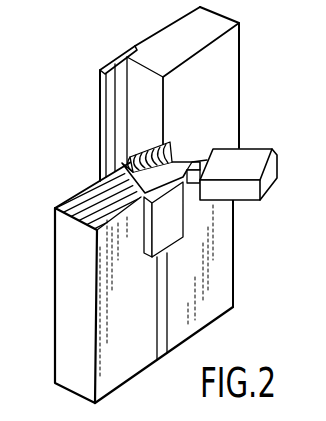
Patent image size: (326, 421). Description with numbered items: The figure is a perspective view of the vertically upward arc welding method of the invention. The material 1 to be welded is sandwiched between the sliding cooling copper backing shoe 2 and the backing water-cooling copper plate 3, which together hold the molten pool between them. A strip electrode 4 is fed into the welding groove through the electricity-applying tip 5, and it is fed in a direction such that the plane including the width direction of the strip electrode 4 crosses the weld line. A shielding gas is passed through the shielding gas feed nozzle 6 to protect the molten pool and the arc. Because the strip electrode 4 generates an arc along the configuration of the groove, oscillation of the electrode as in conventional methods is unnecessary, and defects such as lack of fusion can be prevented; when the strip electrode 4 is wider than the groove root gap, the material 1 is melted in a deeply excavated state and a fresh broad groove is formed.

The material to be welded 1 is at (59, 290).
The sliding cooling copper backing shoe 2 is at (166, 231).
The backing water-cooling copper plate 3 is at (98, 85).
The strip electrode 4 is at (175, 166).
The electricity-applying tip 5 is at (200, 163).
The shielding gas feed nozzle 6 is at (251, 151).